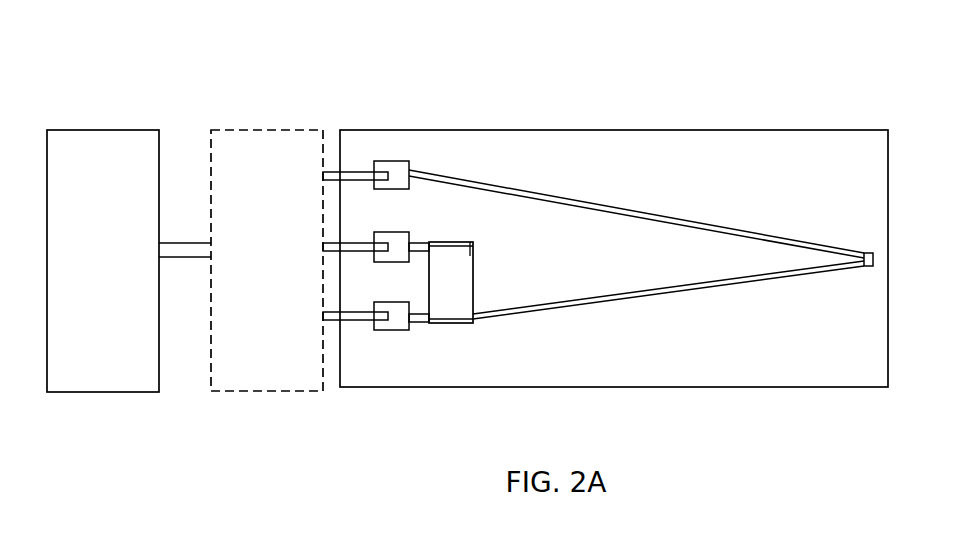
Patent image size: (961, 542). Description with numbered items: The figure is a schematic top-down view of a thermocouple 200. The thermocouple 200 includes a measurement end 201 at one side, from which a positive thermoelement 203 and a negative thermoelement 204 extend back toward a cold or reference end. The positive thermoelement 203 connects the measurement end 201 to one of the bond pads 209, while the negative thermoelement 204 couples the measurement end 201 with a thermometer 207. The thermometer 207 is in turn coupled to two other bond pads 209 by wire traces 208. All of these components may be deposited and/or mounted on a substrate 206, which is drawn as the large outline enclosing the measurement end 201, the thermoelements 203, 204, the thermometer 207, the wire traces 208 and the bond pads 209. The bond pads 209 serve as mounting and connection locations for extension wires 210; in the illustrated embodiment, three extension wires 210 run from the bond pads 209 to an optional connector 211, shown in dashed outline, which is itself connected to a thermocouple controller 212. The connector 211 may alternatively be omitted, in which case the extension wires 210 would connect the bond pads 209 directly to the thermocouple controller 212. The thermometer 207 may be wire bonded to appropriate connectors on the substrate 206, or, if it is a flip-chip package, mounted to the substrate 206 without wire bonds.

The thermocouple 200 is at (763, 112).
The measurement end 201 is at (870, 252).
The positive thermoelement 203 is at (500, 183).
The negative thermoelement 204 is at (610, 303).
The substrate 206 is at (783, 317).
The thermometer 207 is at (457, 287).
The wire traces 208 is at (421, 242).
The bond pads 209 is at (398, 240).
The extension wires 210 is at (352, 243).
The connector 211 is at (267, 260).
The thermocouple controller 212 is at (129, 261).